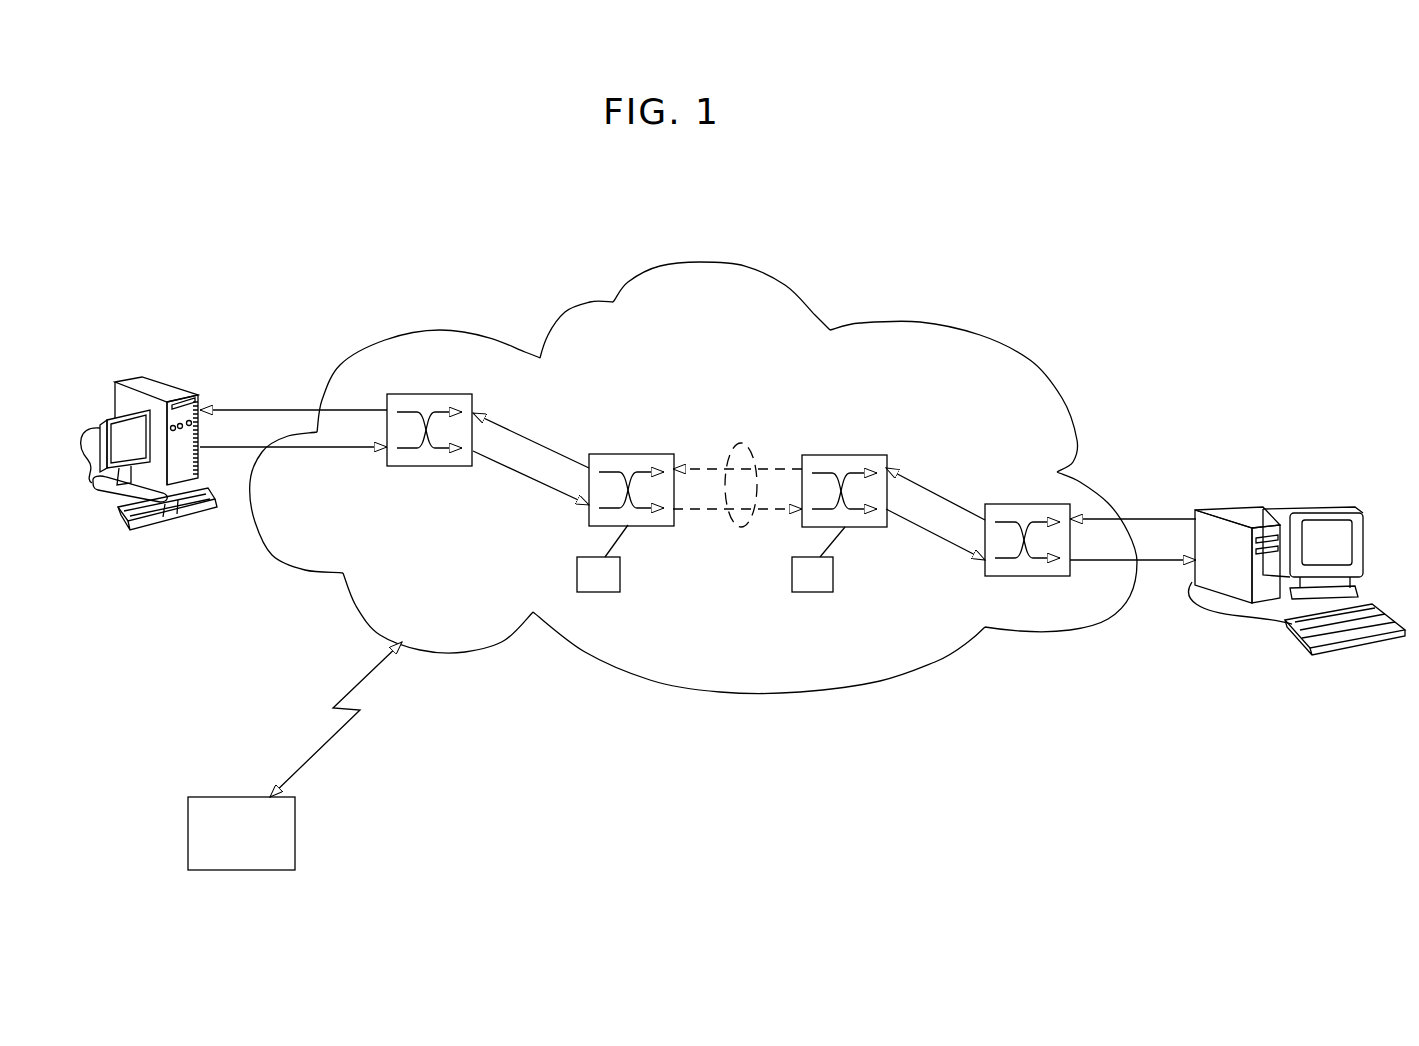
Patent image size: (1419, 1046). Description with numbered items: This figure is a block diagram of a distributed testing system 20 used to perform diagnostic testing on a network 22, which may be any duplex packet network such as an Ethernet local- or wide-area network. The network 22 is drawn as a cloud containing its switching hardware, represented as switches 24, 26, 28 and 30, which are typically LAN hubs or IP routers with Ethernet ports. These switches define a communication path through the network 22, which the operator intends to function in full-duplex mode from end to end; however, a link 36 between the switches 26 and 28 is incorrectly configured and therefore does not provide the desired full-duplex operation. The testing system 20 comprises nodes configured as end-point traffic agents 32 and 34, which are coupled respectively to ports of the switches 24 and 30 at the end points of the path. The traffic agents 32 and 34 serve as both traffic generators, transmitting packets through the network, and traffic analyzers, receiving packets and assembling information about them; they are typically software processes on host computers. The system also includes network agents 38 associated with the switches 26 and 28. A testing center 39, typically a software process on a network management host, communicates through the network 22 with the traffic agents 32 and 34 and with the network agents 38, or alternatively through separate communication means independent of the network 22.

The distributed testing system 20 is at (222, 272).
The network 22 is at (913, 323).
The switch 24 is at (425, 466).
The switch 26 is at (628, 454).
The switch 28 is at (828, 455).
The switch 30 is at (1000, 504).
The end-point traffic agent 32 is at (158, 383).
The end-point traffic agent 34 is at (1225, 510).
The link 36 is at (735, 527).
The network agent 38 is at (585, 592).
The testing center 39 is at (222, 797).